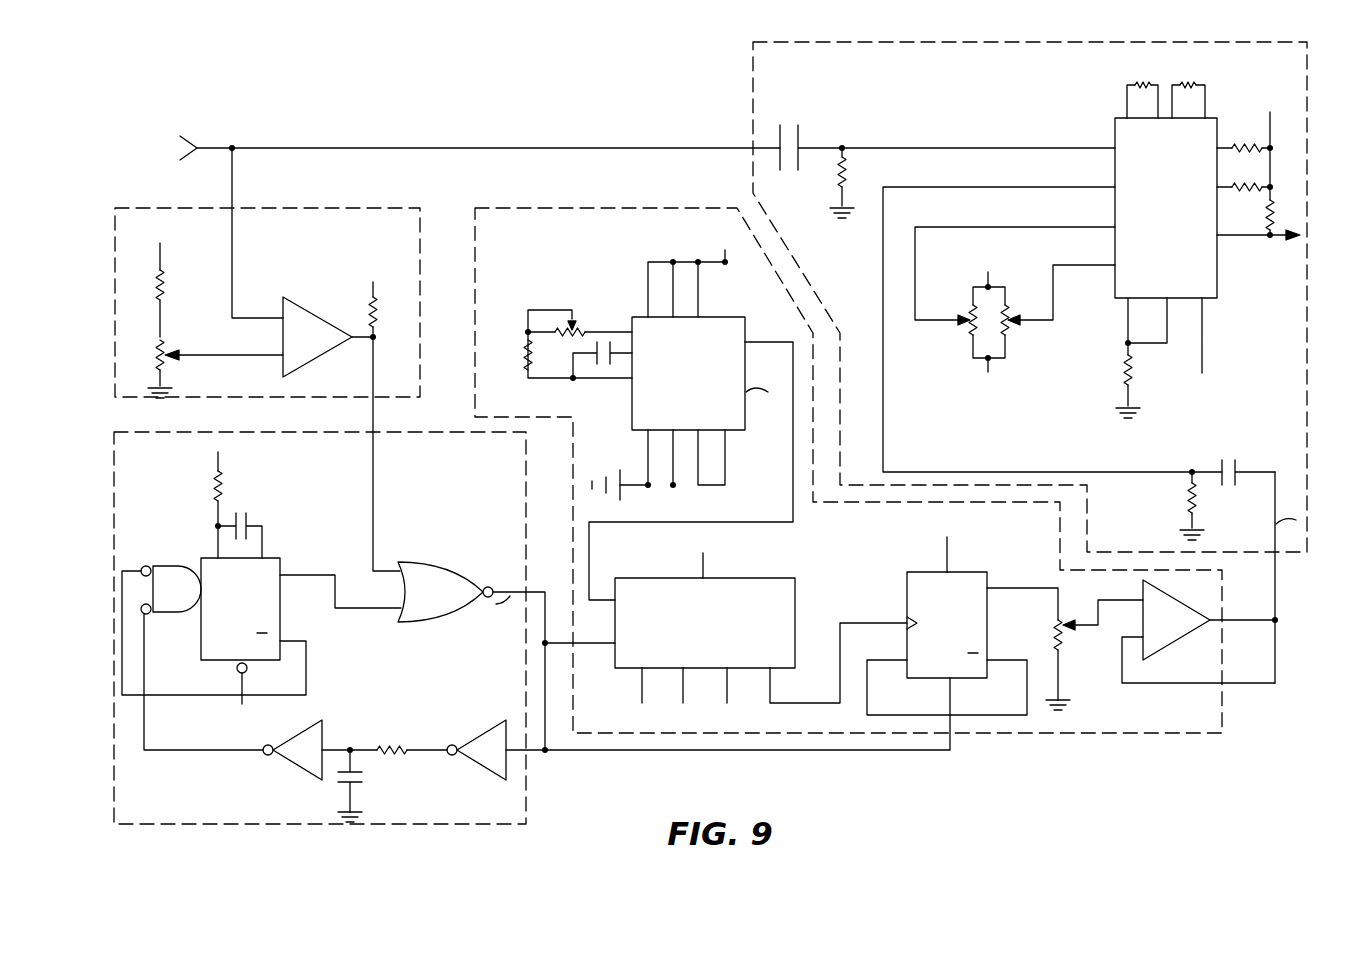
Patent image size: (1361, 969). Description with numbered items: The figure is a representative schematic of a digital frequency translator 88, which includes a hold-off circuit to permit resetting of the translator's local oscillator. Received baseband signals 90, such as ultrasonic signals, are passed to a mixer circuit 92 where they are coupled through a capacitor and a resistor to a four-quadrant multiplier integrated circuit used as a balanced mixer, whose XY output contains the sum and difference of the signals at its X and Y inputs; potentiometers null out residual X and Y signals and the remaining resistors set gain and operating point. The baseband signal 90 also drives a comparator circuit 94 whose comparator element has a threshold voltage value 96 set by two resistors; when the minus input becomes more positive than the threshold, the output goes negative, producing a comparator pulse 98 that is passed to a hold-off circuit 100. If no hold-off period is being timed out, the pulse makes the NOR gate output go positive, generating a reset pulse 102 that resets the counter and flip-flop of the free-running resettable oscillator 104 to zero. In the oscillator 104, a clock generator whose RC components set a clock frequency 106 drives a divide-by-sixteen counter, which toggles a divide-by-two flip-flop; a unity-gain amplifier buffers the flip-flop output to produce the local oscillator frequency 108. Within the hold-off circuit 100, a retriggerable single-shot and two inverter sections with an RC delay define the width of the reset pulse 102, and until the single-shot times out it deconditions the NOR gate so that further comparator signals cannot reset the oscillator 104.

The frequency translator 88 is at (426, 93).
The received baseband signals 90 is at (138, 126).
The mixer circuit 92 is at (752, 58).
The comparator circuit 94 is at (266, 208).
The threshold voltage value 96 is at (232, 366).
The comparator pulse 98 is at (375, 417).
The hold-off circuit 100 is at (266, 432).
The reset pulse 102 is at (545, 590).
The oscillator 104 is at (988, 733).
The clock frequency 106 is at (795, 514).
The local oscillator frequency 108 is at (1277, 588).